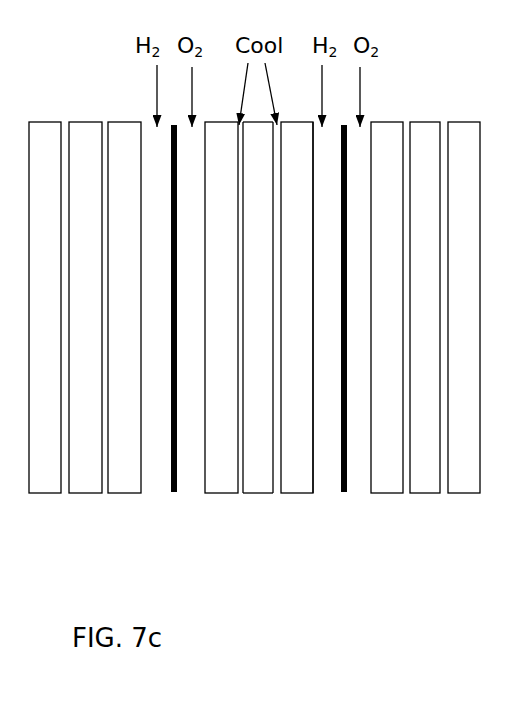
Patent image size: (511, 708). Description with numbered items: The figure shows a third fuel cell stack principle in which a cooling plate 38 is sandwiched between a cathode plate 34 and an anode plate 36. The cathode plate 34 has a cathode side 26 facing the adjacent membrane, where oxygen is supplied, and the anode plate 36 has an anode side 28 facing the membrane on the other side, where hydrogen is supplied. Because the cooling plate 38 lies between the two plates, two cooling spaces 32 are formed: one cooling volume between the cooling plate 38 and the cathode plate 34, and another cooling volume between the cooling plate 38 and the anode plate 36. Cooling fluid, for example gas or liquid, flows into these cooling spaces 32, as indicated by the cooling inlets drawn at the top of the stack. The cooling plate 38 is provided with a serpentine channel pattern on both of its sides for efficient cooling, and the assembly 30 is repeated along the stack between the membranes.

The cathode side 26 is at (177, 355).
The anode side 28 is at (351, 354).
The bipolar plate 30 is at (348, 481).
The cooling space 32 is at (243, 495).
The cathode plate 34 is at (222, 495).
The anode plate 36 is at (295, 495).
The cooling plate 38 is at (260, 495).